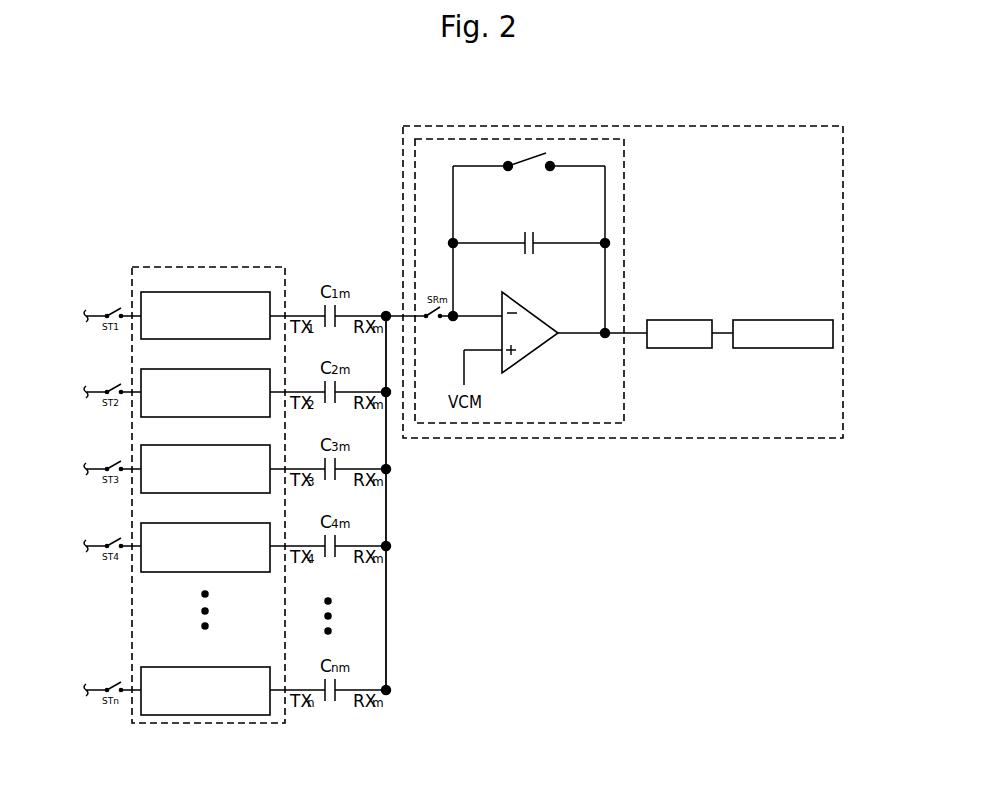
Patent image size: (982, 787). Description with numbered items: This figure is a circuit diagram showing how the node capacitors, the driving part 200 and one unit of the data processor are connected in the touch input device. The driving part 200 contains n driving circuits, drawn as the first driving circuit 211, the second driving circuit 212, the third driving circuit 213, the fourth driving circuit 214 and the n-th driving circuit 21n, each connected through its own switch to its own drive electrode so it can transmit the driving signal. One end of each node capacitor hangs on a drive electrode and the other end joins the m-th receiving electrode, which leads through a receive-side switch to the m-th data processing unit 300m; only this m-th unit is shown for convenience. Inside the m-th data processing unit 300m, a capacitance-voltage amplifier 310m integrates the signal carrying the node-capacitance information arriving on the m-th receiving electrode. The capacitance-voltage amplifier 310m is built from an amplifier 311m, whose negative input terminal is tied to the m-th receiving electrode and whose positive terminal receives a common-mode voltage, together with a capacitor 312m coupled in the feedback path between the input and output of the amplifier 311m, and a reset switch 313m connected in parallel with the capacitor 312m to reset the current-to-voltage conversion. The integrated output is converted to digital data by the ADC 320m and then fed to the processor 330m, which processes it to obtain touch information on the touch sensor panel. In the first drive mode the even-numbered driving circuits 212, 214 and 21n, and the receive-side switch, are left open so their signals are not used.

The driving part 200 is at (213, 266).
The first driving circuit 211 is at (205, 304).
The second driving circuit 212 is at (205, 381).
The third driving circuit 213 is at (205, 457).
The fourth driving circuit 214 is at (205, 535).
The n-th driving circuit 21n is at (205, 678).
The m-th data processing unit 300m is at (843, 198).
The capacitance-voltage amplifier 310m is at (624, 205).
The amplifier 311m is at (534, 353).
The capacitor 312m is at (534, 229).
The reset switch 313m is at (524, 153).
The ADC 320m is at (680, 319).
The processor 330m is at (784, 319).